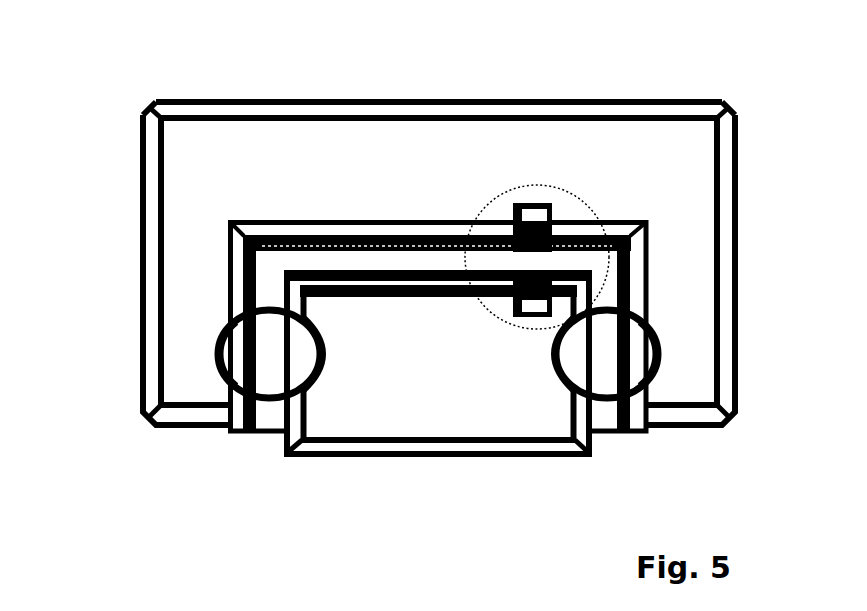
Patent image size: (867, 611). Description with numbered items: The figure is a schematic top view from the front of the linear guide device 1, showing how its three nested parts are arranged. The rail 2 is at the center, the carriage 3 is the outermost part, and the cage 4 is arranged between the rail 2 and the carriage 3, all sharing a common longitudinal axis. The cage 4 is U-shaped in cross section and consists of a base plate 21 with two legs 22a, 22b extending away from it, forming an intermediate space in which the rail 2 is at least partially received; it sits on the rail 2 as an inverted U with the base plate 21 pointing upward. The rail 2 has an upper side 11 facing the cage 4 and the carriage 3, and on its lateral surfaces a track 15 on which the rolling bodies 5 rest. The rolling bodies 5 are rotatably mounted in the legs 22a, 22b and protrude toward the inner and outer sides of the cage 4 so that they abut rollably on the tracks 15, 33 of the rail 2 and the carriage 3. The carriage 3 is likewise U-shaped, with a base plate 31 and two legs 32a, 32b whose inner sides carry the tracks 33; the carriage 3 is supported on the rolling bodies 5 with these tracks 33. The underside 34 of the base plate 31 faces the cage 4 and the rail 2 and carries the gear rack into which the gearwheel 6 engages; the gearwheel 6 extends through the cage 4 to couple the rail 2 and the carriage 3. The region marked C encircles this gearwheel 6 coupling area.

The linear guide device 1 is at (427, 282).
The rail 2 is at (438, 350).
The carriage 3 is at (427, 218).
The cage 4 is at (440, 227).
The rolling bodies 5 is at (244, 366).
The gearwheel 6 is at (553, 232).
The upper side 11 is at (405, 290).
The track 15 is at (324, 358).
The base plate 21 is at (418, 265).
The leg 22a is at (612, 305).
The leg 22b is at (272, 303).
The base plate 31 is at (515, 140).
The leg 32a is at (693, 360).
The leg 32b is at (180, 373).
The tracks 33 is at (218, 352).
The underside 34 is at (408, 243).
The detail region C is at (537, 251).